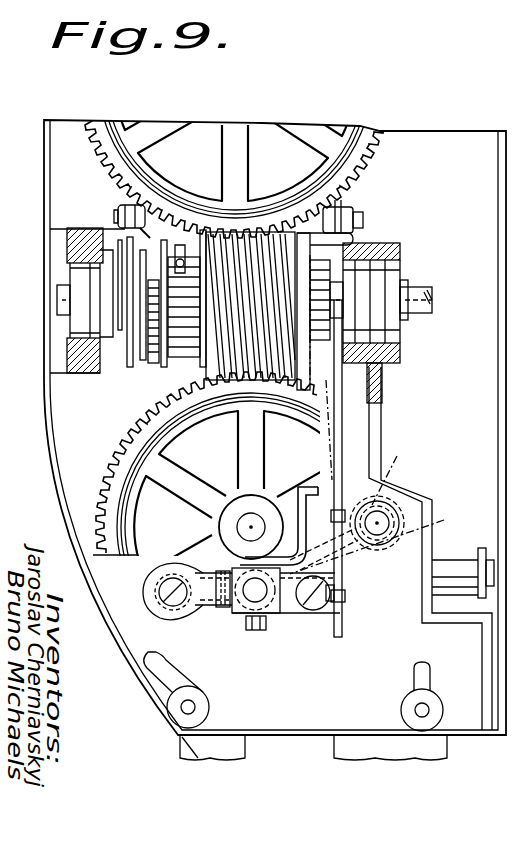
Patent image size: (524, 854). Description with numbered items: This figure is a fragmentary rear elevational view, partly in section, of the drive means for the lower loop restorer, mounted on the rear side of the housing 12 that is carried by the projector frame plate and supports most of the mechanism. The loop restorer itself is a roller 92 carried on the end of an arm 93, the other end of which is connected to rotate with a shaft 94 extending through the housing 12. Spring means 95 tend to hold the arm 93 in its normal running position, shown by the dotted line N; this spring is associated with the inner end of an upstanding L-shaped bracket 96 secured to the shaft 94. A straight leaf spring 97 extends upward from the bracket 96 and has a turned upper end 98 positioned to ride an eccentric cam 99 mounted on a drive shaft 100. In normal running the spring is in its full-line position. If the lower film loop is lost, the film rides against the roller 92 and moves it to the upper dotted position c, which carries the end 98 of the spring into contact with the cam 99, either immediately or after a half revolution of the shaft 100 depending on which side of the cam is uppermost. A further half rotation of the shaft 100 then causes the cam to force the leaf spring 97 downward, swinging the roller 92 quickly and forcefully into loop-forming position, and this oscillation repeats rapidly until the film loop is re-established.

The housing 12 is at (107, 600).
The roller 92 is at (389, 497).
The arm 93 is at (359, 567).
The shaft 94 is at (258, 598).
The spring means 95 is at (222, 603).
The L-shaped bracket 96 is at (325, 610).
The leaf spring 97 is at (330, 444).
The turned upper end 98 is at (340, 318).
The eccentric cam 99 is at (323, 272).
The drive shaft 100 is at (333, 298).
The upper dotted line position c is at (385, 471).
The normal running position N is at (374, 540).